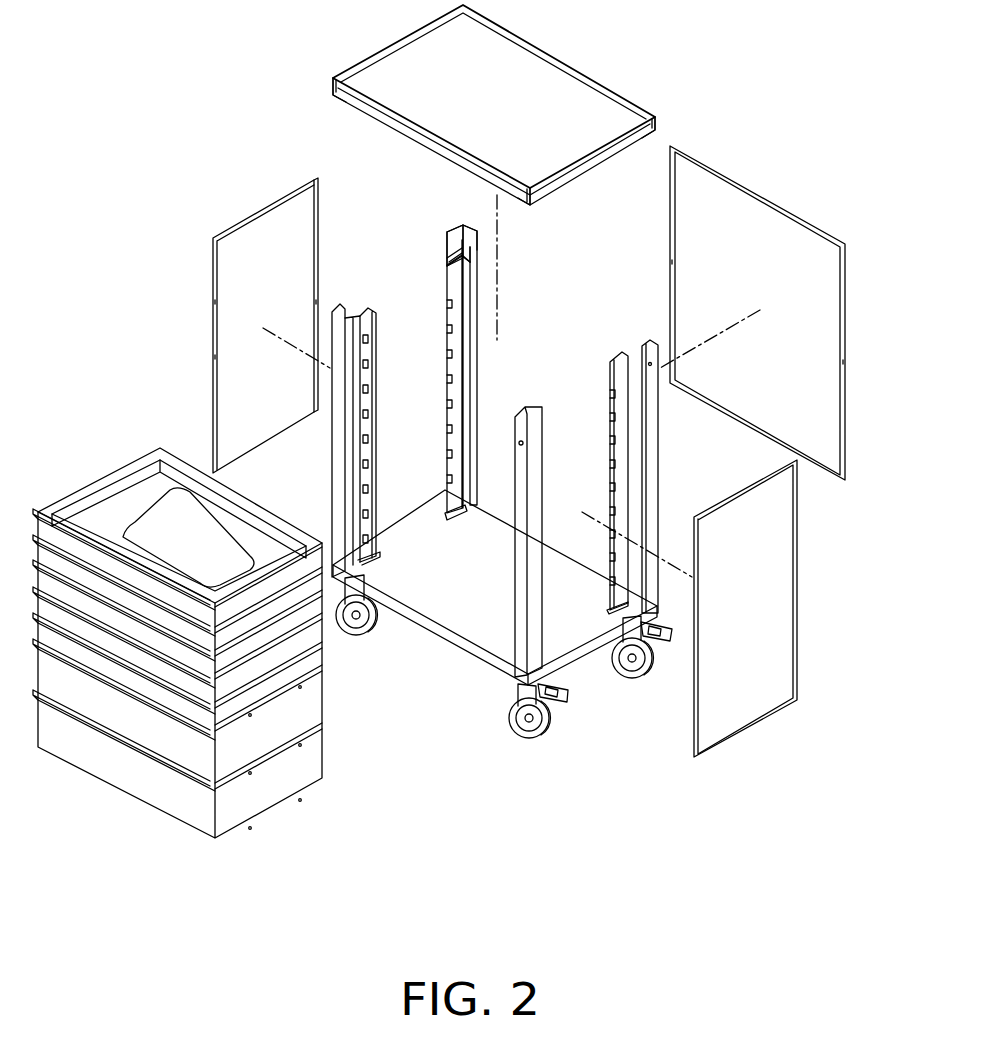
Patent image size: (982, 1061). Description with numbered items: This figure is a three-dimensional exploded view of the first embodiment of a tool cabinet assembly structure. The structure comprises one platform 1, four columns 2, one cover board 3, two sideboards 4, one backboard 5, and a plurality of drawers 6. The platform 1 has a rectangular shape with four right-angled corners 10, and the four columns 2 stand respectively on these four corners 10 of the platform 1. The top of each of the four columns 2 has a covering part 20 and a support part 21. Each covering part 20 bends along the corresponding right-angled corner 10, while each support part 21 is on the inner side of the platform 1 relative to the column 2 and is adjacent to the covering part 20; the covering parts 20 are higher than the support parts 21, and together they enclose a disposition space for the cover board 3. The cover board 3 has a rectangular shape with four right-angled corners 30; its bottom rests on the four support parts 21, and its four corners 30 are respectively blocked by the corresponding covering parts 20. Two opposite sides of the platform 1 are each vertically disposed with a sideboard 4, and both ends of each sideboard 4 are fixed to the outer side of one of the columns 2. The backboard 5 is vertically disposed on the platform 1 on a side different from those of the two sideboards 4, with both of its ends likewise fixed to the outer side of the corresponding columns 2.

The platform 1 is at (439, 626).
The columns 2 is at (337, 442).
The cover board 3 is at (551, 72).
The sideboards 4 is at (263, 235).
The backboard 5 is at (777, 223).
The drawers 6 is at (130, 764).
The right-angled corners 10 is at (338, 562).
The covering part 20 is at (455, 238).
The support part 21 is at (448, 262).
The right-angled corners 30 is at (333, 78).